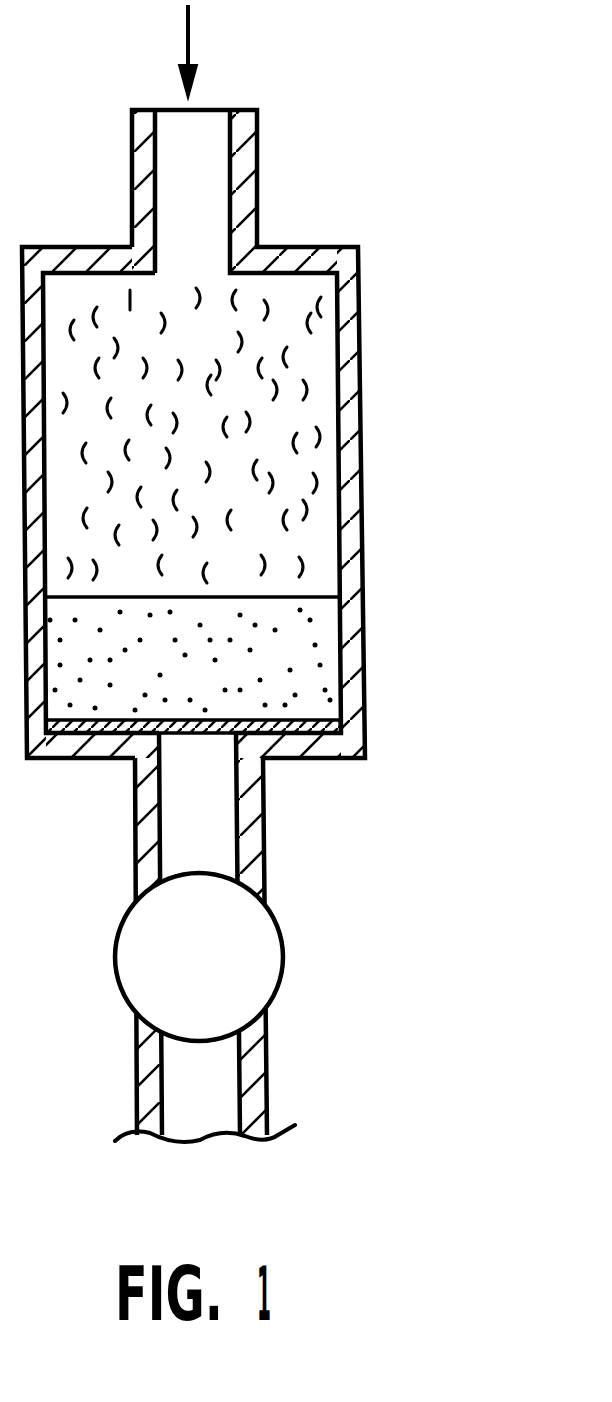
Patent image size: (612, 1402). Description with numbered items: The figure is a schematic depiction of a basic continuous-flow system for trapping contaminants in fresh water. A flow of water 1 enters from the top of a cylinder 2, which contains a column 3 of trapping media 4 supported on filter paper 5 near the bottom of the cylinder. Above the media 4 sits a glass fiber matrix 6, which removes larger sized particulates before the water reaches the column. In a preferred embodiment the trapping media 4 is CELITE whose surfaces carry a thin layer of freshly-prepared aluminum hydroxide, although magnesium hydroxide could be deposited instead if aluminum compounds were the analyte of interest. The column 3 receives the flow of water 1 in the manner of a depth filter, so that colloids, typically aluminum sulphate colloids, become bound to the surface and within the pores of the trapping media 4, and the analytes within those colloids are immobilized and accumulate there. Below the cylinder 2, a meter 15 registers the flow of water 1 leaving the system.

The flow of water 1 is at (190, 22).
The cylinder 2 is at (350, 464).
The column 3 is at (317, 620).
The trapping media 4 is at (315, 675).
The filter paper 5 is at (320, 730).
The glass fiber matrix 6 is at (320, 335).
The meter 15 is at (258, 942).